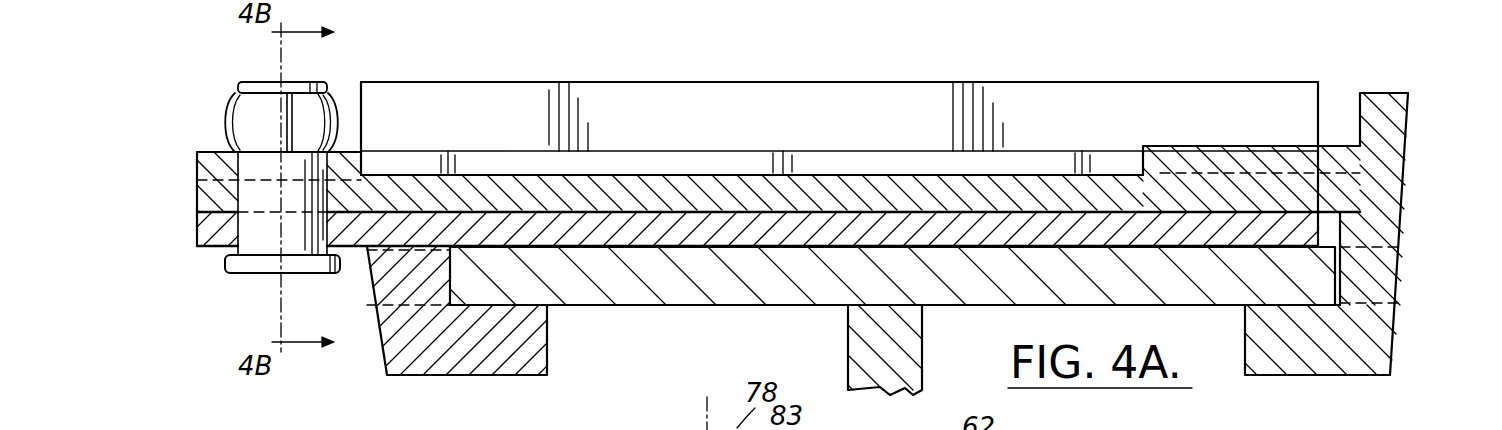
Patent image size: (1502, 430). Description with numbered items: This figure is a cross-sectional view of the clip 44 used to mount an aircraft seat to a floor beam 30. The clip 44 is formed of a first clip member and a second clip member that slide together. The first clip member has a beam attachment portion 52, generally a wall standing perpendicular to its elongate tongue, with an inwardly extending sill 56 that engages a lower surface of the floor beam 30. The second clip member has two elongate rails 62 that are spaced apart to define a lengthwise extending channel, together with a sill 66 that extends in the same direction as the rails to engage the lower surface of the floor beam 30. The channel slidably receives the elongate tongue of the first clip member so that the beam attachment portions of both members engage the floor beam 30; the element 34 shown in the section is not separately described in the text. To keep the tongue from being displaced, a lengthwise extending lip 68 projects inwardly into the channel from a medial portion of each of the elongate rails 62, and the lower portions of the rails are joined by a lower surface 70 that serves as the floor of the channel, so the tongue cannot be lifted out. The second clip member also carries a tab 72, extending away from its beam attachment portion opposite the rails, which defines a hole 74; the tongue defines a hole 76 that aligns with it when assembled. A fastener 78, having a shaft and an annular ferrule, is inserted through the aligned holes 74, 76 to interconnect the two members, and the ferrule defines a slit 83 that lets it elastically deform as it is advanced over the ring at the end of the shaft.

The floor beam 30 is at (890, 357).
The upper plate 34 is at (622, 190).
The clip 44 is at (850, 73).
The beam attachment portion 52 is at (1387, 160).
The sill 56 is at (1310, 352).
The elongate rails 62 is at (600, 117).
The sill 66 is at (507, 353).
The lengthwise extending lip 68 is at (483, 170).
The lower surface 70 is at (1300, 227).
The tab 72 is at (205, 223).
The hole 74 is at (223, 240).
The hole 76 is at (230, 187).
The fastener 78 is at (312, 66).
The slit 83 is at (297, 133).